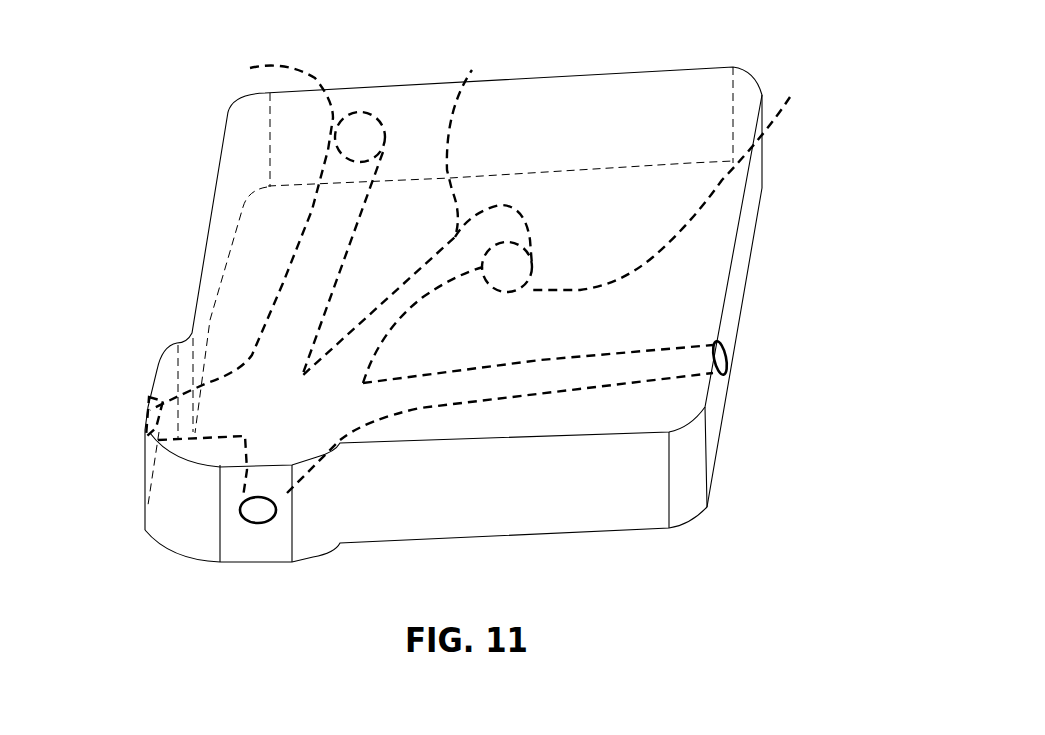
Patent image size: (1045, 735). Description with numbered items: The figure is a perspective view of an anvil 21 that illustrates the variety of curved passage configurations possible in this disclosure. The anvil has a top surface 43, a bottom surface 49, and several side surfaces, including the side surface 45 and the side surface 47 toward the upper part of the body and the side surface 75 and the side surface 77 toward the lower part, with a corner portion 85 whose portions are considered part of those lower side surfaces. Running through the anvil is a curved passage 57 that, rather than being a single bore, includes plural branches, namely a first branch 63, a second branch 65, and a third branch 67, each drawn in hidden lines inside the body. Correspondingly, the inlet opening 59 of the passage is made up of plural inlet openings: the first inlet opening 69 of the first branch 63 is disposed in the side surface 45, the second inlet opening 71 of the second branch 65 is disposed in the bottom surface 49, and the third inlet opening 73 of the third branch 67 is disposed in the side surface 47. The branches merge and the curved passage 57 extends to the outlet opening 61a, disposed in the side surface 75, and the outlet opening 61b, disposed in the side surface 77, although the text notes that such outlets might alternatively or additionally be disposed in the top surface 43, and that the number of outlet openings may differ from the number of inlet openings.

The anvil 21 is at (838, 91).
The top surface 43 is at (683, 303).
The side surface 45 is at (530, 123).
The side surface 47 is at (743, 224).
The bottom surface 49 is at (688, 268).
The curved passage 57 is at (248, 385).
The inlet opening 59 is at (353, 116).
The outlet opening 61a is at (143, 410).
The outlet opening 61b is at (262, 512).
The first branch 63 is at (320, 213).
The second branch 65 is at (493, 156).
The third branch 67 is at (505, 388).
The first inlet opening 69 is at (241, 229).
The second inlet opening 71 is at (679, 180).
The third inlet opening 73 is at (723, 373).
The side surface 75 is at (197, 280).
The side surface 77 is at (453, 497).
The corner portion 85 is at (177, 508).